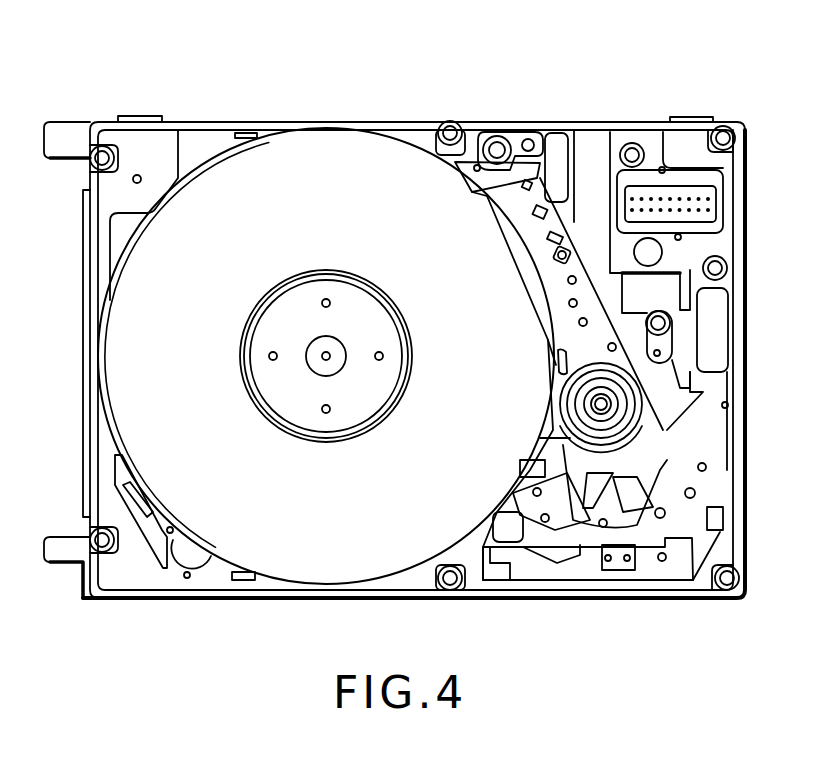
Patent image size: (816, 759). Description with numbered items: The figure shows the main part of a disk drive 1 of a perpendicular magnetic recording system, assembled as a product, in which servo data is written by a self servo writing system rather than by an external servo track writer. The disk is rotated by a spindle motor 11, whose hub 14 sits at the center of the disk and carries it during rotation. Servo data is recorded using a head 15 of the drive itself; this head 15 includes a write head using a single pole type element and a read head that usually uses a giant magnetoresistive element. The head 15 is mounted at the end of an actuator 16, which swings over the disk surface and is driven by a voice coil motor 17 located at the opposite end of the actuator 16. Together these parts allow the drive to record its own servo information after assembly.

The disk drive 1 is at (358, 112).
The spindle motor 11 is at (120, 291).
The spindle motor hub 14 is at (277, 382).
The head 15 is at (541, 158).
The actuator 16 is at (598, 337).
The voice coil motor 17 is at (622, 527).